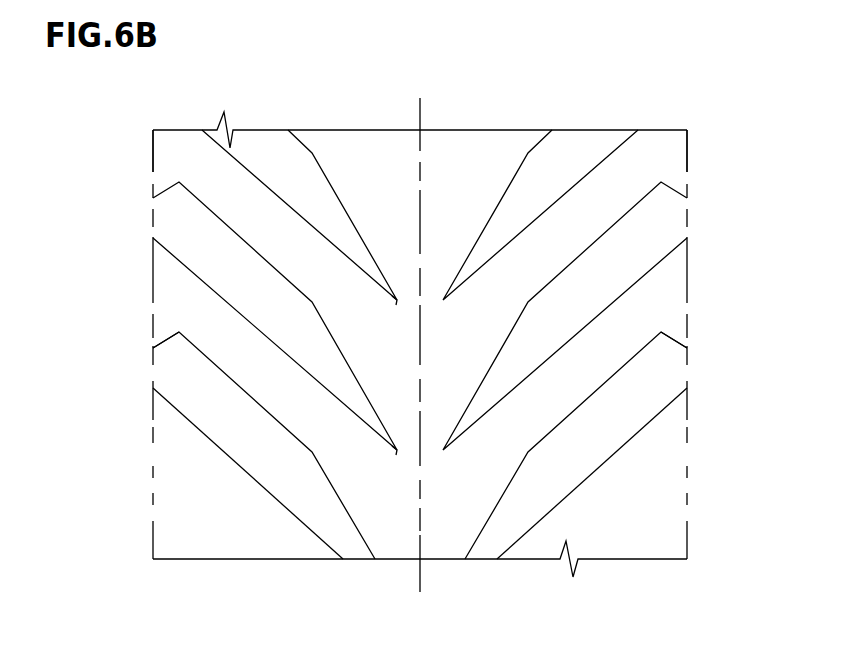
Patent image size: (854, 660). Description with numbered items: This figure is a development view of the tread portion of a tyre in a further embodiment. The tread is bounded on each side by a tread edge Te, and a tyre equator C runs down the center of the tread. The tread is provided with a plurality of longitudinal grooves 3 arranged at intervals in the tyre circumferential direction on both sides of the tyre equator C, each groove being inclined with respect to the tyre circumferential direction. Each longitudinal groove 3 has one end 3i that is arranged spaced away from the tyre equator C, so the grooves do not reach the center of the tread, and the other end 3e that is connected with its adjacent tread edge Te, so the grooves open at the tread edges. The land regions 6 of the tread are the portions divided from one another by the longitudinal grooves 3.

The longitudinal groove 3 is at (207, 248).
The other end of longitudinal groove 3e is at (153, 348).
The one end of longitudinal groove 3i is at (398, 455).
The land region 6 is at (620, 513).
The tread edge Te is at (153, 163).
The tyre equator C is at (419, 333).